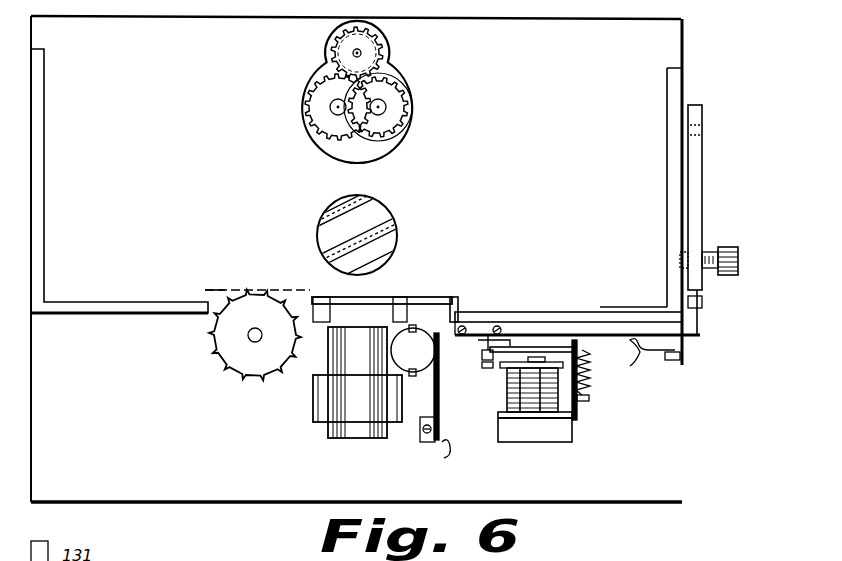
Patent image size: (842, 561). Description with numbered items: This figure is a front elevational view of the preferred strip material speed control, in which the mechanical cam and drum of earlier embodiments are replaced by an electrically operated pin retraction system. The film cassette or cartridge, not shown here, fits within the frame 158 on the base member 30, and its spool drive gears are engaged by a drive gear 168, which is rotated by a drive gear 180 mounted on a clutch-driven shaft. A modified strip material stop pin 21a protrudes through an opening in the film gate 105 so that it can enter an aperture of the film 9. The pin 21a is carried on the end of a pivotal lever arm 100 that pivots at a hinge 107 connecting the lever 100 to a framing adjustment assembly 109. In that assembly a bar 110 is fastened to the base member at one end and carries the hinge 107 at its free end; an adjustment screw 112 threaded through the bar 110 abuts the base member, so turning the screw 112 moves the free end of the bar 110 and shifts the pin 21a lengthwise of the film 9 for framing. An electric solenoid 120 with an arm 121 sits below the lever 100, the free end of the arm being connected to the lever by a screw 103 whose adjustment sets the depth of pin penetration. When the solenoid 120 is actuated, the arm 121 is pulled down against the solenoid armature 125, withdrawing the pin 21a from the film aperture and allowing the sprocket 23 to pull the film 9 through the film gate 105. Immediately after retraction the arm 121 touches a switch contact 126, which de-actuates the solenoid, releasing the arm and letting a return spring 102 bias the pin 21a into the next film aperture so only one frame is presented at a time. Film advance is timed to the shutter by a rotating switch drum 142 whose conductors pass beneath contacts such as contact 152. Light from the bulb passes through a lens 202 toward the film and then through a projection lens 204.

The base member 30 is at (684, 34).
The drive gear 168 is at (304, 114).
The drive gear 180 is at (368, 54).
The lens 202 is at (383, 216).
The sprocket 23 is at (257, 292).
The film 9 is at (213, 288).
The film gate 105 is at (380, 295).
The modified strip material stop pin 21a is at (452, 296).
The pivotal lever arm 100 is at (482, 328).
The projection lens 204 is at (352, 432).
The rotating switch drum 142 is at (423, 366).
The contact 152 is at (438, 424).
The screw 103 is at (481, 345).
The switch contact 126 is at (482, 365).
The solenoid armature 125 is at (506, 372).
The solenoid arm 121 is at (578, 350).
The electric solenoid 120 is at (588, 407).
The frame 158 is at (667, 80).
The bar 110 is at (704, 172).
The framing adjustment assembly 109 is at (717, 219).
The adjustment screw 112 is at (733, 252).
The hinge 107 is at (692, 301).
The return spring 102 is at (648, 358).